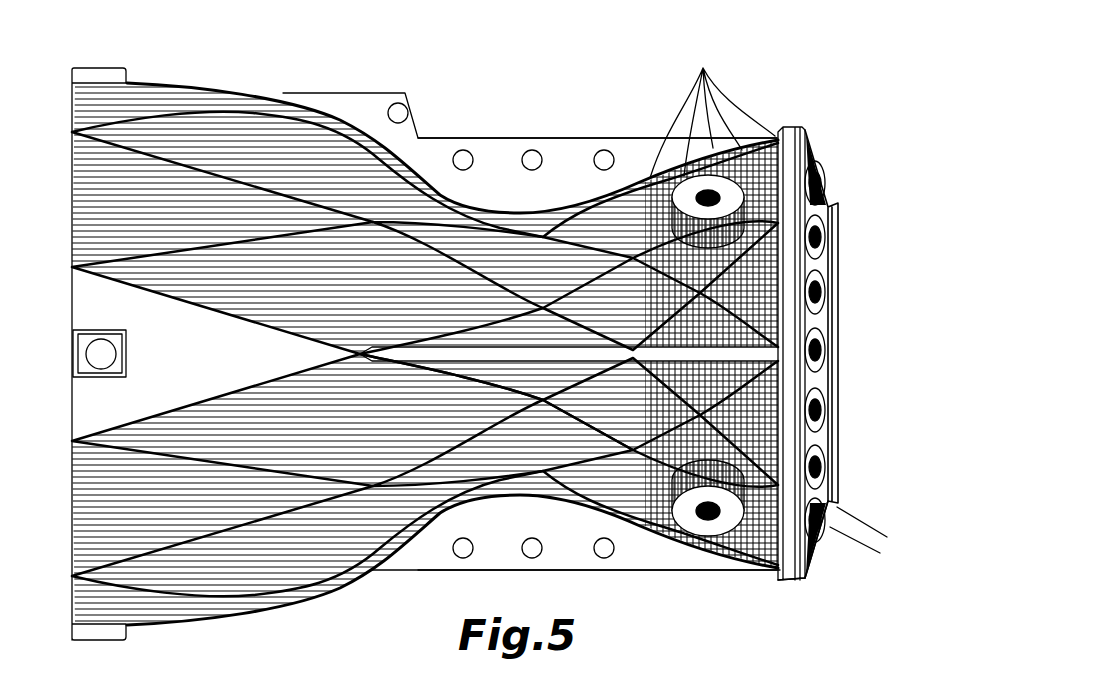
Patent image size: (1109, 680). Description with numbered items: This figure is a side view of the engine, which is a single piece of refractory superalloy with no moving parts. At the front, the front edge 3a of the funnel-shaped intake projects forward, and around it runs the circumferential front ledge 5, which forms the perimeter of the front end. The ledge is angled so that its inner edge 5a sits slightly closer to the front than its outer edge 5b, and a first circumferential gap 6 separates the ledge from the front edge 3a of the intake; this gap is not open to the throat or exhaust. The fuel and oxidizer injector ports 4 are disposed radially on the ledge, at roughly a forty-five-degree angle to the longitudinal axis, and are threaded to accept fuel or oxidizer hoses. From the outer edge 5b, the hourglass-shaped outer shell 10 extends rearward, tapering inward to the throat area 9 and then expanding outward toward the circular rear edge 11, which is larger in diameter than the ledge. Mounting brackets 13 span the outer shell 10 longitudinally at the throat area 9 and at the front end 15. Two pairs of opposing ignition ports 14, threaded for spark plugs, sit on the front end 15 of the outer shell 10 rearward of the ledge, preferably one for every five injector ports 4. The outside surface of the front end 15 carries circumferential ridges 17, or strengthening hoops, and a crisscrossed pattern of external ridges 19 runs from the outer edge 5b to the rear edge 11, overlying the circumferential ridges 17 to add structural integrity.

The front edge 3a is at (840, 323).
The fuel/oxidizer injector port 4 is at (823, 463).
The circumferential front ledge 5 is at (823, 270).
The inner edge 5a is at (823, 377).
The outer edge 5b is at (805, 578).
The first circumferential gap 6 is at (862, 551).
The throat area 9 is at (543, 488).
The outer shell 10 is at (230, 562).
The rear edge 11 is at (72, 124).
The mounting bracket 13 is at (628, 553).
The ignition port 14 is at (710, 520).
The front end of outer shell 15 is at (738, 575).
The circumferential ridges 17 is at (712, 112).
The external ridges 19 is at (262, 218).